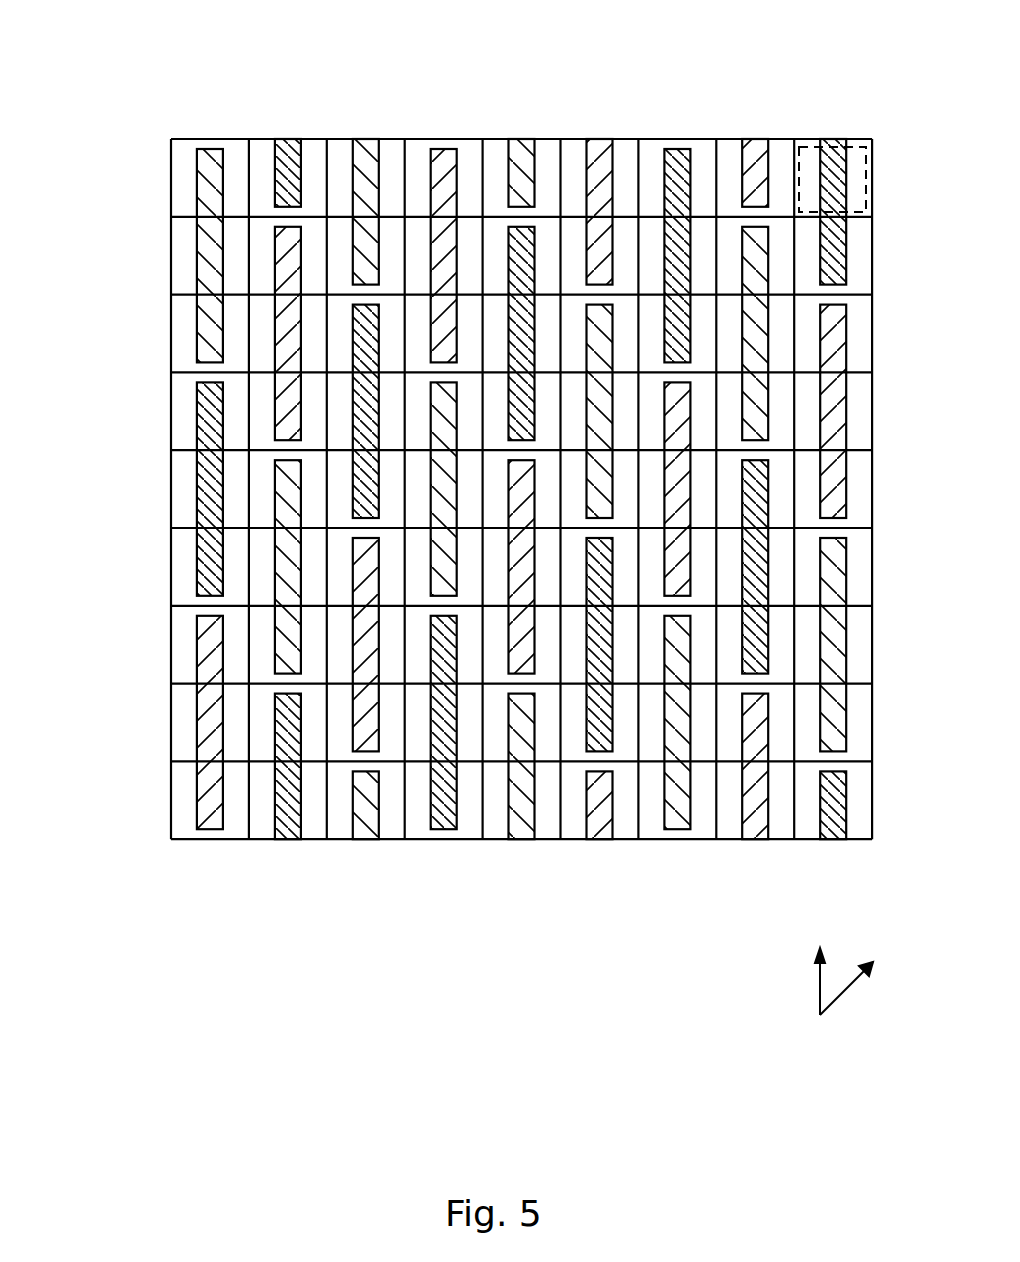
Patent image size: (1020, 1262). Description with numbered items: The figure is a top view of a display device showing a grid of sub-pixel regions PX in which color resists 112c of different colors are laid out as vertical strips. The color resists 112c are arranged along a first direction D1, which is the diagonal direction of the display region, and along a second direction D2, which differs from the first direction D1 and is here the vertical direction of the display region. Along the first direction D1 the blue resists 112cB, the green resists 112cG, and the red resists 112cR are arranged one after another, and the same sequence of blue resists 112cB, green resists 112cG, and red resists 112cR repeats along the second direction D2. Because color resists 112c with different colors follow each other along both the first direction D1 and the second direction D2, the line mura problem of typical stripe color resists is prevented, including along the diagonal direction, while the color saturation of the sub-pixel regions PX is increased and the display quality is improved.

The color resists 112c is at (440, 425).
The red resists 112cR is at (212, 178).
The green resists 112cG is at (297, 248).
The blue resists 112cB is at (210, 396).
The sub-pixel regions PX is at (866, 170).
The first direction D1 is at (867, 978).
The second direction D2 is at (820, 965).